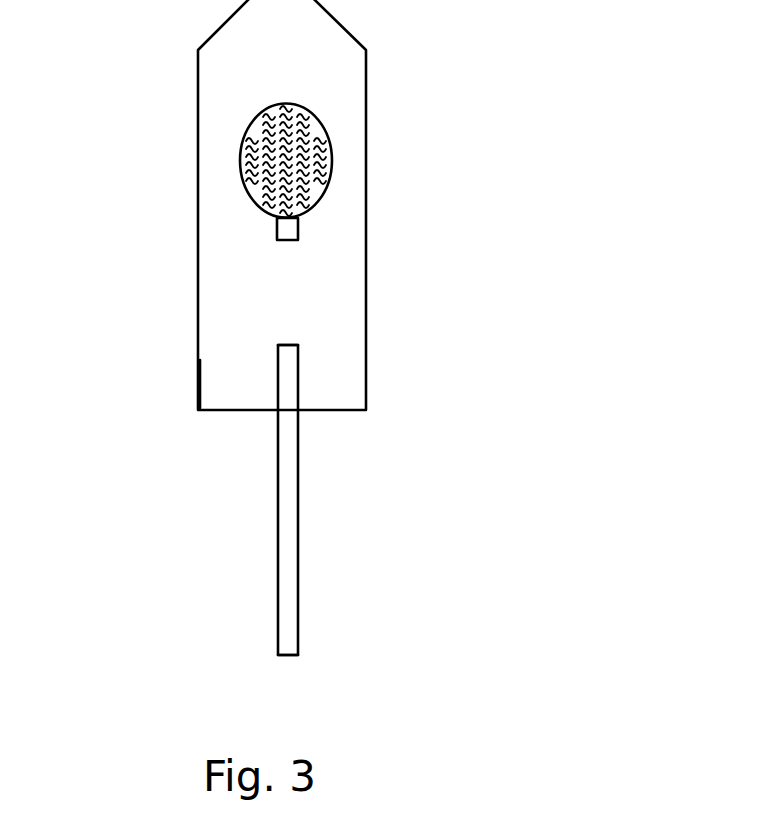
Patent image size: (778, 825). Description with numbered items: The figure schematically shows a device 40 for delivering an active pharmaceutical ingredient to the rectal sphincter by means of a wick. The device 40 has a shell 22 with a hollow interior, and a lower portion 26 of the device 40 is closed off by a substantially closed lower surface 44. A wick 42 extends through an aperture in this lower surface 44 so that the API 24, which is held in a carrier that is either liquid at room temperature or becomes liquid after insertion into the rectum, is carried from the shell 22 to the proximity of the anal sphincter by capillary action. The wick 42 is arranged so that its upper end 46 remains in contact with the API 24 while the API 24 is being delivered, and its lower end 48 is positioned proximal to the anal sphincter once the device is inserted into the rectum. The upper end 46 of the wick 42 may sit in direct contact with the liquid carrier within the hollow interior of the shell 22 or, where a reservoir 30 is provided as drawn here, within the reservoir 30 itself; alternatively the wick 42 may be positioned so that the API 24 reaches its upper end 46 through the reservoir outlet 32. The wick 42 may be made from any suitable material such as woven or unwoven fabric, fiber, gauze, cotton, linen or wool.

The device 40 is at (339, 343).
The shell 22 is at (366, 243).
The API 24 is at (262, 125).
The reservoir 30 is at (322, 129).
The reservoir outlet 32 is at (277, 230).
The lower surface 44 is at (222, 358).
The lower portion 26 is at (345, 485).
The wick 42 is at (283, 393).
The upper end 46 is at (290, 343).
The lower end 48 is at (288, 662).